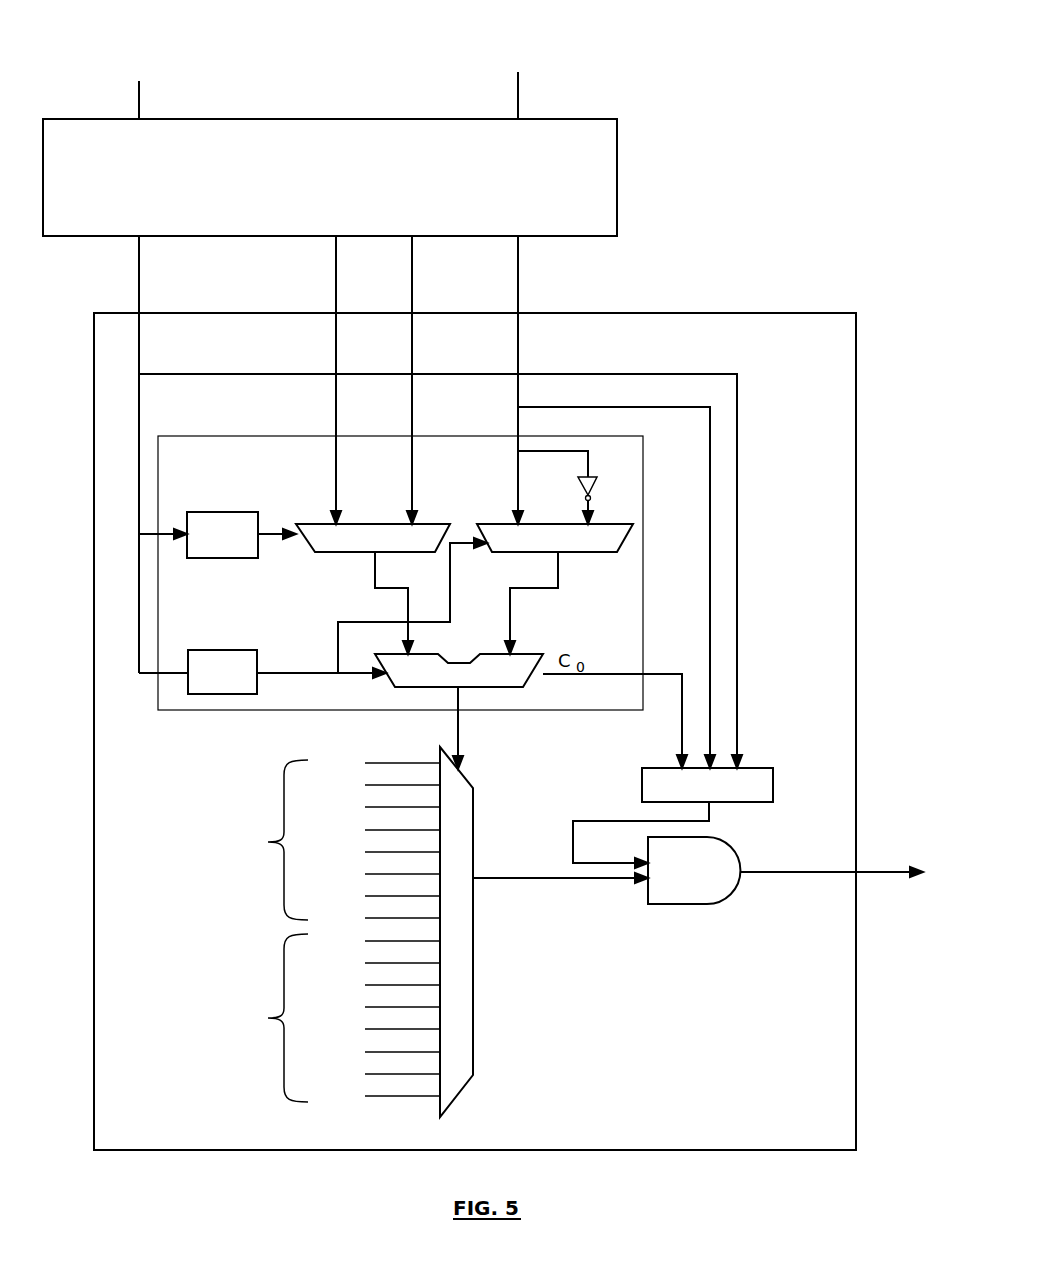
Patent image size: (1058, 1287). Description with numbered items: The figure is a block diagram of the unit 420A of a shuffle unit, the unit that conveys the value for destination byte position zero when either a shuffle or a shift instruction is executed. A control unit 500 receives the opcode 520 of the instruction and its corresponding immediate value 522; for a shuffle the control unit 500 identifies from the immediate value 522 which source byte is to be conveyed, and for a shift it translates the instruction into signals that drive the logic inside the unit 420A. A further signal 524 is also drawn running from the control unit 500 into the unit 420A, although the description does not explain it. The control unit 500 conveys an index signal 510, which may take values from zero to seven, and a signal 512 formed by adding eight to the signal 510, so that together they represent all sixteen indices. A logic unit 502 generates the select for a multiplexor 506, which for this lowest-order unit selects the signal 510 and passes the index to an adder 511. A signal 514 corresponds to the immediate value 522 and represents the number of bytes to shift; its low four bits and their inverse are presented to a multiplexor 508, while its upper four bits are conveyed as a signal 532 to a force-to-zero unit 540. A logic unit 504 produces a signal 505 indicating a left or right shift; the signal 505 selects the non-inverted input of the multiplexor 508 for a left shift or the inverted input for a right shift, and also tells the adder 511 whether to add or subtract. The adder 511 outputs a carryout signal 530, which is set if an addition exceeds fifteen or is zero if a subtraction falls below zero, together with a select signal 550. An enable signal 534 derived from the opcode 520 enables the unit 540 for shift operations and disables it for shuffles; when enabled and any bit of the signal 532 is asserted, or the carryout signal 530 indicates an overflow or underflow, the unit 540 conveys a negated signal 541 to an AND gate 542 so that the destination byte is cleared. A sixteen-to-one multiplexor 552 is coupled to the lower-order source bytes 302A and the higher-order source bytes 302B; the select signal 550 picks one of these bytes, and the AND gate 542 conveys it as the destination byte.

The control unit 500 is at (347, 190).
The opcode 520 is at (142, 98).
The immediate (imm8) value 522 is at (522, 95).
The control signal line 524 is at (139, 282).
The index signal 510 is at (335, 298).
The index signal 512 is at (412, 297).
The shift value signal 514 is at (518, 292).
The logic unit 502 is at (241, 535).
The logic unit 504 is at (222, 672).
The shift direction signal 505 is at (308, 673).
The multiplexor 506 is at (373, 589).
The multiplexor 508 is at (555, 589).
The adder 511 is at (459, 671).
The carryout signal 530 is at (646, 673).
The upper shift bits signal 532 is at (708, 702).
The enable signal 534 is at (737, 648).
The force to 0 unit 540 is at (707, 785).
The negated signal 541 is at (632, 821).
The AND gate 542 is at (785, 870).
The select signal 550 is at (440, 737).
The 16-to-1 multiplexor 552 is at (460, 952).
The source bytes 302A is at (316, 839).
The source bytes 302B is at (315, 1017).
The unit 420A is at (157, 1140).